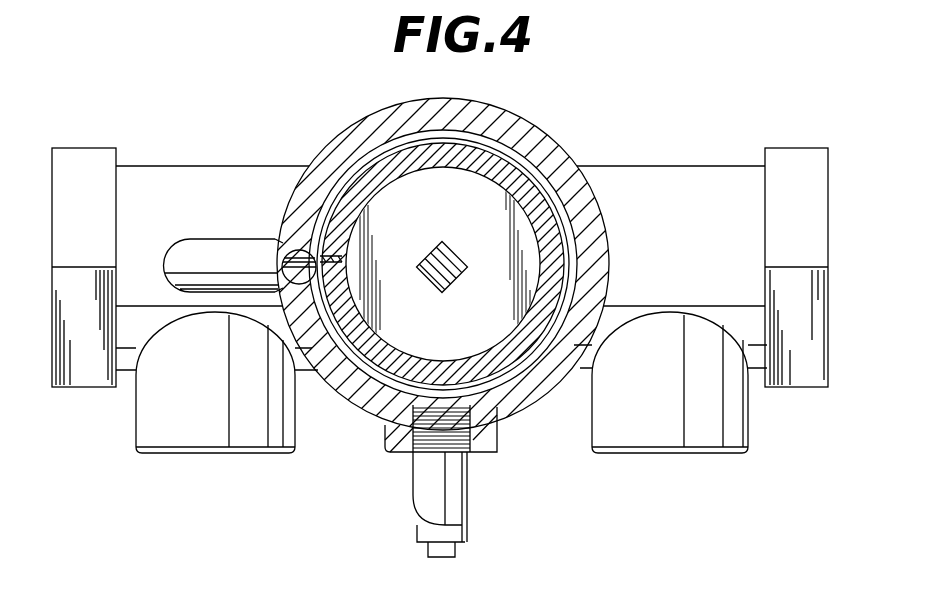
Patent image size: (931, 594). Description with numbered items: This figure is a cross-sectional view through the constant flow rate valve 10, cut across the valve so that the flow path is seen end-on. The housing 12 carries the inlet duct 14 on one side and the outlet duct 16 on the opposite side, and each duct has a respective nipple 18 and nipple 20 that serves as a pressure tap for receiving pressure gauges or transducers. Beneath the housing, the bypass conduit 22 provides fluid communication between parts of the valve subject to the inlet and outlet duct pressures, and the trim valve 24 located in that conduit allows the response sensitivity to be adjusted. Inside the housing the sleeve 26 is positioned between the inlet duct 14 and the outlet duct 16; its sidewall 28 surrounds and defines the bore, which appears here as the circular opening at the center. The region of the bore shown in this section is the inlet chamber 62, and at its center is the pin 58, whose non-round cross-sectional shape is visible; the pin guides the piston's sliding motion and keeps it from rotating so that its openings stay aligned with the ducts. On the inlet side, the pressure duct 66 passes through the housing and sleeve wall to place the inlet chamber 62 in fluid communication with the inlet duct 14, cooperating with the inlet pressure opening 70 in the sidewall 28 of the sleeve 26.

The constant flow rate valve 10 is at (768, 96).
The housing 12 is at (548, 140).
The inlet duct 14 is at (192, 183).
The outlet duct 16 is at (657, 178).
The nipple 18 is at (210, 432).
The nipple 20 is at (715, 438).
The bypass conduit 22 is at (466, 490).
The trim valve 24 is at (416, 540).
The sleeve 26 is at (487, 165).
The sidewall 28 is at (372, 185).
The pin 58 is at (440, 262).
The inlet chamber 62 is at (455, 337).
The pressure duct 66 is at (300, 258).
The inlet pressure opening 70 is at (268, 265).